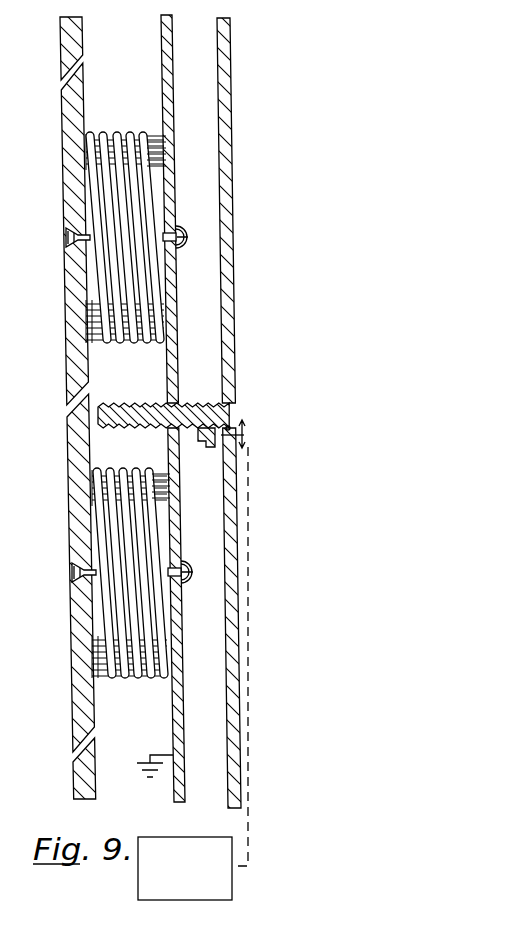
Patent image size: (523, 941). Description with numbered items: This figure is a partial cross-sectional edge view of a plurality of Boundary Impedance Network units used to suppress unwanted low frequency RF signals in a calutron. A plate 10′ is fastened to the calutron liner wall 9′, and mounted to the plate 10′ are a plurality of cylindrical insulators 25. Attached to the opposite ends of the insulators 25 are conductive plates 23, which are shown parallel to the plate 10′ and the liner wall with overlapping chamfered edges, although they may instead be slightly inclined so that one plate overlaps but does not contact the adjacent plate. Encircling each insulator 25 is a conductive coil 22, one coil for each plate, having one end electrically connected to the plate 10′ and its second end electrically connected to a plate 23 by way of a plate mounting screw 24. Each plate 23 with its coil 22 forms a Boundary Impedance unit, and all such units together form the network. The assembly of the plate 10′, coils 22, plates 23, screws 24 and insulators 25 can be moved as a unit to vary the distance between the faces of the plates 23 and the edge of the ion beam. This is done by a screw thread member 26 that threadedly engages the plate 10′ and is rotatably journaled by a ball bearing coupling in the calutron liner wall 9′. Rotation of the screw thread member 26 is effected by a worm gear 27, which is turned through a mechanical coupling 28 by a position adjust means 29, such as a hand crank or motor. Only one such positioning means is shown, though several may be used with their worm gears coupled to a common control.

The calutron liner wall 9′ is at (218, 41).
The plate 10′ is at (175, 161).
The conductive coil 22 is at (122, 345).
The conductive plate 23 is at (62, 115).
The plate mounting screw 24 is at (66, 235).
The cylindrical insulator 25 is at (152, 136).
The screw thread member 26 is at (108, 404).
The worm gear 27 is at (213, 449).
The mechanical coupling 28 is at (248, 533).
The position adjust means 29 is at (161, 837).